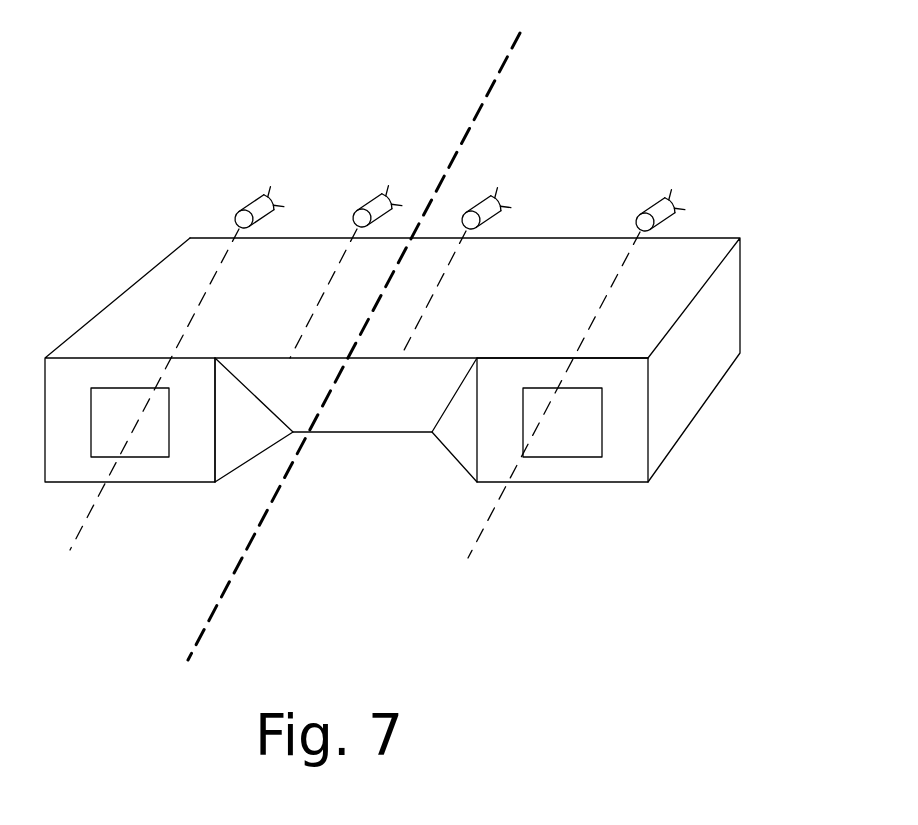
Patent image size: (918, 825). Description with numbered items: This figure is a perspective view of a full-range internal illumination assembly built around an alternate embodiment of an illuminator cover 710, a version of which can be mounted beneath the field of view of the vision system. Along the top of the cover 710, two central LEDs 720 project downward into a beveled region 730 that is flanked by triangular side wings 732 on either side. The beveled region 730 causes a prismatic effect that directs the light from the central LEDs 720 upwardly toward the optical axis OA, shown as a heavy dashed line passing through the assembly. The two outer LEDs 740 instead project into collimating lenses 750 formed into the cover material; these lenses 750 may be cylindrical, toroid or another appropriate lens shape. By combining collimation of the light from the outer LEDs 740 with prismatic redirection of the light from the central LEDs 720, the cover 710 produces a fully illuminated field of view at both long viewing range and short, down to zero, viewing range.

The illuminator cover 710 is at (702, 242).
The central LEDs 720 is at (427, 237).
The beveled region 730 is at (405, 425).
The triangular side wings 732 is at (342, 442).
The outer LEDs 740 is at (377, 337).
The collimating lenses 750 is at (152, 447).
The optical axis OA is at (394, 340).